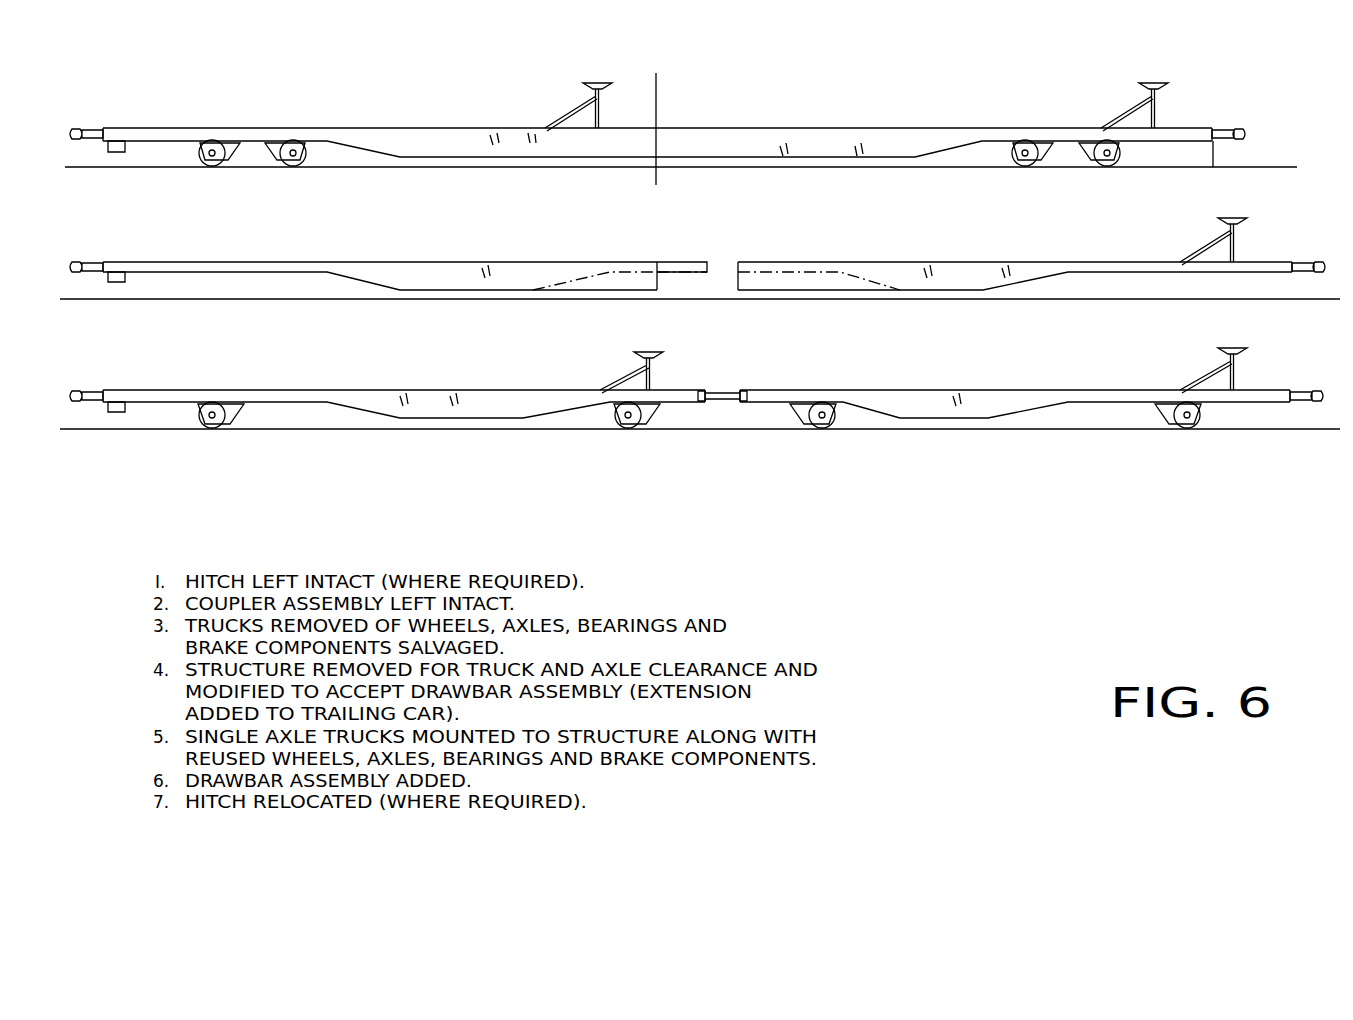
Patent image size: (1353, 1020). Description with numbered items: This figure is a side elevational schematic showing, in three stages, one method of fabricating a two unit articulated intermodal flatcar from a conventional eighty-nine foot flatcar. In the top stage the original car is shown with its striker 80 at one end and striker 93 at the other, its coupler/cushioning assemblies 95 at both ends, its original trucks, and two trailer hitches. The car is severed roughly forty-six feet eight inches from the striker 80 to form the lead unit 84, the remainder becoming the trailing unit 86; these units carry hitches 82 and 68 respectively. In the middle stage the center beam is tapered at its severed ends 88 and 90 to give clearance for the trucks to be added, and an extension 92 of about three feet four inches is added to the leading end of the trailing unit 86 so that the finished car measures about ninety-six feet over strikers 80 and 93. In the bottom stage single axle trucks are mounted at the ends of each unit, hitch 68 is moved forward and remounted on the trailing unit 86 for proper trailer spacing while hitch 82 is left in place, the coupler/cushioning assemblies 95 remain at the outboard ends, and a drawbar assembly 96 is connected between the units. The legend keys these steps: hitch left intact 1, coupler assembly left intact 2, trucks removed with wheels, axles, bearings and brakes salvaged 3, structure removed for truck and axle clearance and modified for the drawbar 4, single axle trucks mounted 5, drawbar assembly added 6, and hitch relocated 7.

The hitch left intact 1 is at (1153, 83).
The coupler assembly left intact 2 is at (78, 128).
The trucks removed 3 is at (290, 167).
The structure removed for truck and axle clearance 4 is at (678, 272).
The single axle trucks mounted to structure 5 is at (215, 430).
The drawbar assembly added 6 is at (718, 391).
The hitch relocated 7 is at (597, 83).
The hitch 68 is at (600, 110).
The striker 80 is at (1282, 434).
The hitch 82 is at (1157, 110).
The lead unit 84 is at (930, 125).
The trailing unit 86 is at (412, 125).
The severed end of center beam 88 is at (660, 265).
The severed end of center beam 90 is at (740, 265).
The extension 92 is at (690, 265).
The striker 93 is at (105, 142).
The coupler/cushioning assembly 95 is at (77, 140).
The drawbar assembly 96 is at (716, 401).